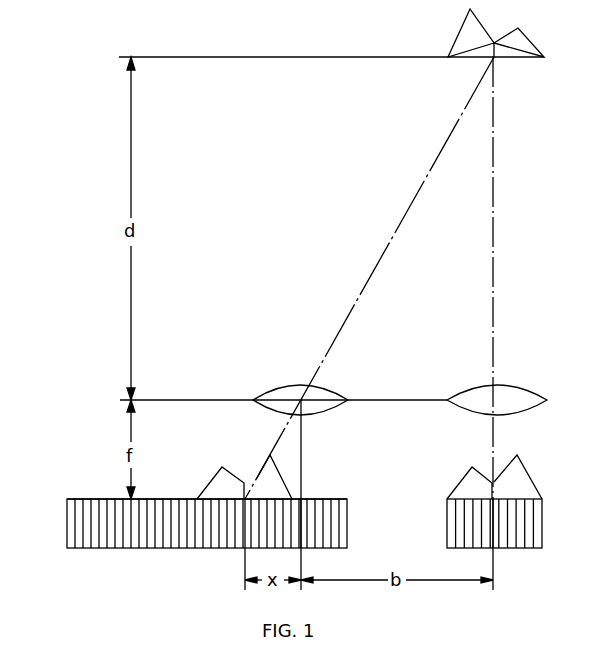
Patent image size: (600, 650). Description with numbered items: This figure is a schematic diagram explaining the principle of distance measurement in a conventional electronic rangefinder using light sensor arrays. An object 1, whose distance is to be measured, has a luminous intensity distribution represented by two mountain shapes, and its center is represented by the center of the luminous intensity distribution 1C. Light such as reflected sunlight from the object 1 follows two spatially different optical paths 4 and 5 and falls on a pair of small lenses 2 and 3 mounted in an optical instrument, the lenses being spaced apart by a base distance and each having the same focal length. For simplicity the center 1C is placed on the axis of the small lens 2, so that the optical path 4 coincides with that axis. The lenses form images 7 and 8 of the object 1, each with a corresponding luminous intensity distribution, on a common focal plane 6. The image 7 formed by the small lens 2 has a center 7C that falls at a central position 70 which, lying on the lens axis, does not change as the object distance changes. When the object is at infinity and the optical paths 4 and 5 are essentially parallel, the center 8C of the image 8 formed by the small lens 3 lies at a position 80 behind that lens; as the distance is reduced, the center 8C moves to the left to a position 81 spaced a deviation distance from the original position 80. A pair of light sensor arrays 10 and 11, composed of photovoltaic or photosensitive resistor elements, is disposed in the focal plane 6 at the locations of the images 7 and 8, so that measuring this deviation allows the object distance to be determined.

The object 1 is at (528, 39).
The center of the luminous intensity distribution 1C is at (495, 48).
The small lens 2 is at (533, 392).
The small lens 3 is at (270, 387).
The optical path 4 is at (493, 215).
The optical path 5 is at (397, 228).
The focal plane 6 is at (102, 499).
The image 7 is at (523, 465).
The center of image 7 7C is at (493, 492).
The image 8 is at (280, 473).
The center of image 8 8C is at (243, 488).
The light sensor array 10 is at (542, 527).
The light sensor array 11 is at (67, 527).
The central position 70 is at (495, 548).
The position 80 is at (302, 548).
The position 81 is at (243, 548).